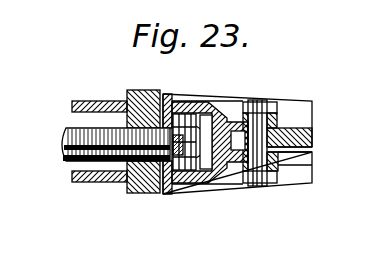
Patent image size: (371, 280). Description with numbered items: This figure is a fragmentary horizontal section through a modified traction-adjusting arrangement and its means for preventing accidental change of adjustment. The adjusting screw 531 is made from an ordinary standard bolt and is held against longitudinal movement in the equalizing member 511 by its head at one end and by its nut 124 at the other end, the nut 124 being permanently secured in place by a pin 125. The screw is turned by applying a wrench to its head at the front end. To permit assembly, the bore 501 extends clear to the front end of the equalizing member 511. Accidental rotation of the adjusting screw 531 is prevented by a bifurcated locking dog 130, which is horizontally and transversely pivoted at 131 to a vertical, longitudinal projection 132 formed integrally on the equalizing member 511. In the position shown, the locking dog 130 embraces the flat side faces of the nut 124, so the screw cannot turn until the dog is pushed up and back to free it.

The bifurcated locking dog 130 is at (205, 102).
The pivot 131 is at (261, 112).
The equalizing member 511 is at (325, 84).
The projection 132 is at (314, 149).
The adjusting screw 531 is at (60, 152).
The bore 501 is at (113, 170).
The nut 124 is at (178, 168).
The pin 125 is at (201, 170).